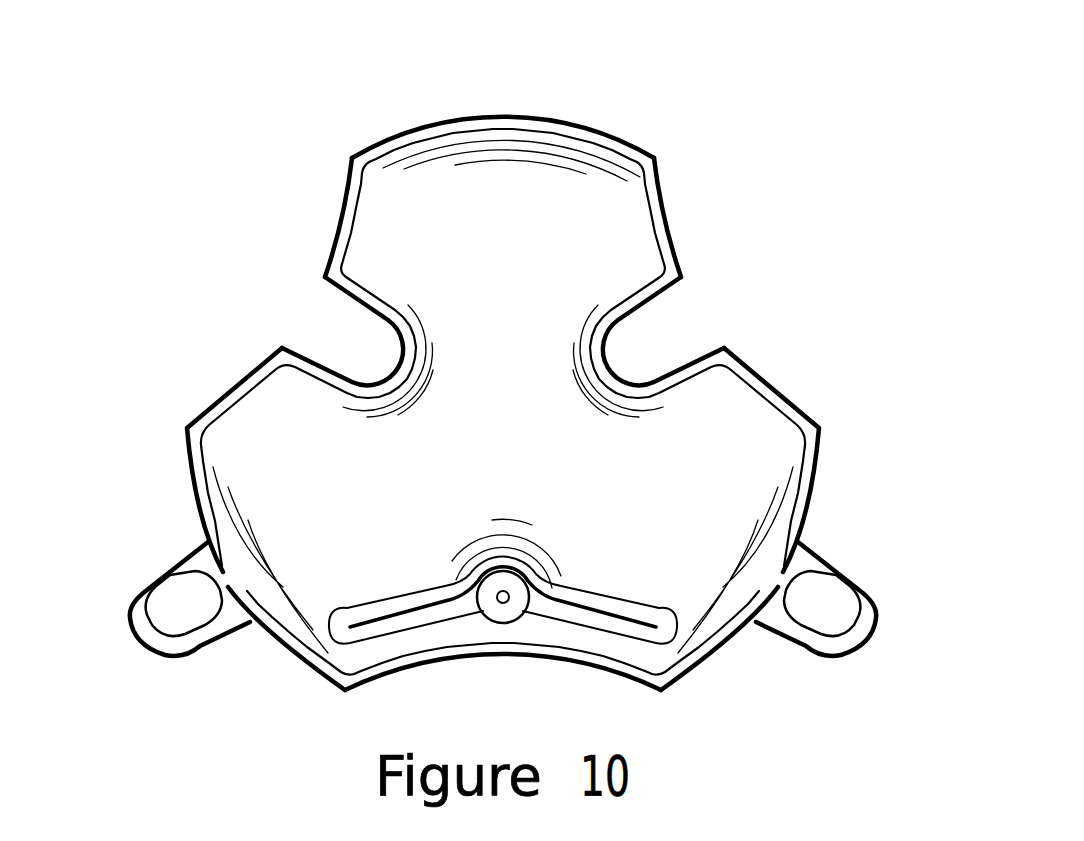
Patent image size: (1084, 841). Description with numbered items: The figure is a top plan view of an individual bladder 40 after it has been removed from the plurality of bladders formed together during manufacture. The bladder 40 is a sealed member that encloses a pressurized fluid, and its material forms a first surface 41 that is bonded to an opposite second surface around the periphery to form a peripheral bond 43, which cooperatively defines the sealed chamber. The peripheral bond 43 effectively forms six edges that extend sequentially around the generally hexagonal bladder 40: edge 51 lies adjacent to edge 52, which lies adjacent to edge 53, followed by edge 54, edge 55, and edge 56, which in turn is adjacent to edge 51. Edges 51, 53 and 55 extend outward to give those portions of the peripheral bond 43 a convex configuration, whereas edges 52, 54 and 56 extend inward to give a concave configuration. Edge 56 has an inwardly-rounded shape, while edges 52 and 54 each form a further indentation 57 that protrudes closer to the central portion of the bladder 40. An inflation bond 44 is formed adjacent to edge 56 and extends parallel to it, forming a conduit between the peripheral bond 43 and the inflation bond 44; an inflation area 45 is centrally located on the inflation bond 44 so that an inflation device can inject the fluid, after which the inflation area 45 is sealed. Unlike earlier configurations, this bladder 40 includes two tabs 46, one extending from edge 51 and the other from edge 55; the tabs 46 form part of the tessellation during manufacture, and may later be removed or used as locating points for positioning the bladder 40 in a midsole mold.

The bladder 40 is at (684, 112).
The first surface 41 is at (525, 450).
The peripheral bond 43 is at (355, 158).
The inflation bond 44 is at (612, 612).
The inflation area 45 is at (493, 582).
The tab 46 is at (133, 634).
The edge 51 is at (722, 660).
The edge 52 is at (777, 398).
The edge 53 is at (502, 116).
The edge 54 is at (340, 218).
The edge 55 is at (190, 497).
The edge 56 is at (500, 657).
The indentation 57 is at (380, 377).